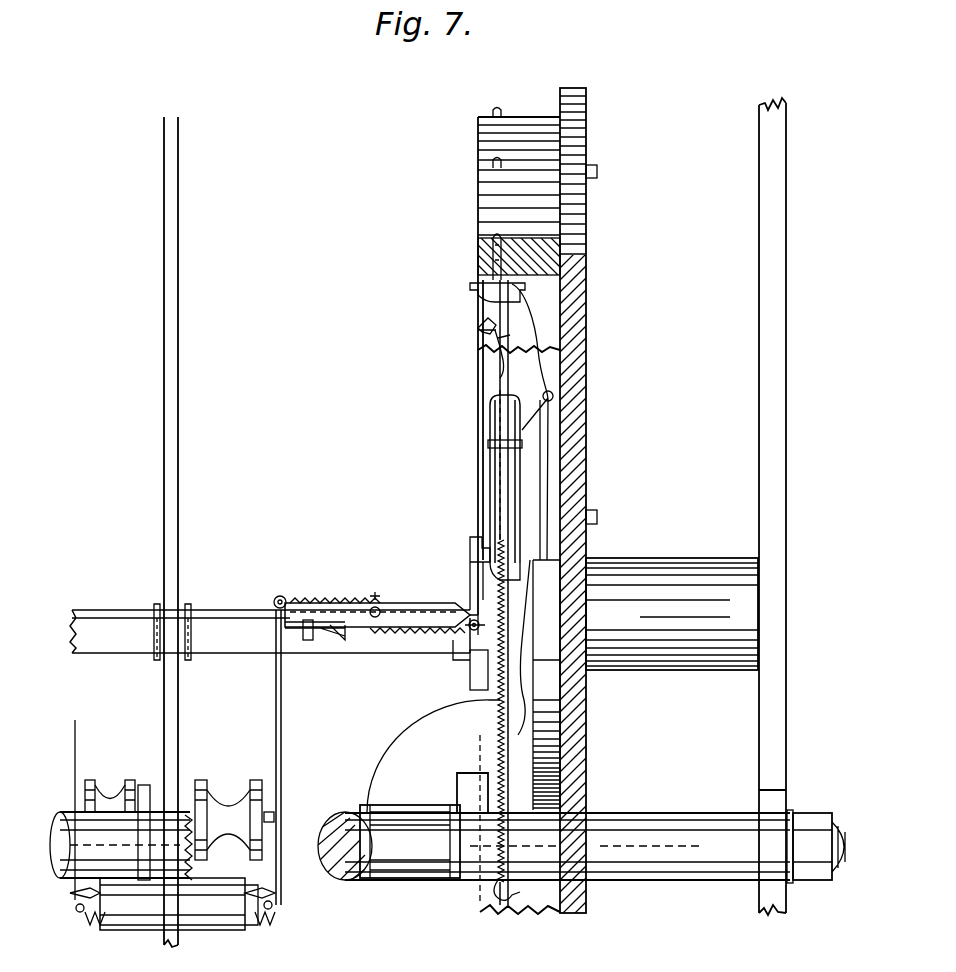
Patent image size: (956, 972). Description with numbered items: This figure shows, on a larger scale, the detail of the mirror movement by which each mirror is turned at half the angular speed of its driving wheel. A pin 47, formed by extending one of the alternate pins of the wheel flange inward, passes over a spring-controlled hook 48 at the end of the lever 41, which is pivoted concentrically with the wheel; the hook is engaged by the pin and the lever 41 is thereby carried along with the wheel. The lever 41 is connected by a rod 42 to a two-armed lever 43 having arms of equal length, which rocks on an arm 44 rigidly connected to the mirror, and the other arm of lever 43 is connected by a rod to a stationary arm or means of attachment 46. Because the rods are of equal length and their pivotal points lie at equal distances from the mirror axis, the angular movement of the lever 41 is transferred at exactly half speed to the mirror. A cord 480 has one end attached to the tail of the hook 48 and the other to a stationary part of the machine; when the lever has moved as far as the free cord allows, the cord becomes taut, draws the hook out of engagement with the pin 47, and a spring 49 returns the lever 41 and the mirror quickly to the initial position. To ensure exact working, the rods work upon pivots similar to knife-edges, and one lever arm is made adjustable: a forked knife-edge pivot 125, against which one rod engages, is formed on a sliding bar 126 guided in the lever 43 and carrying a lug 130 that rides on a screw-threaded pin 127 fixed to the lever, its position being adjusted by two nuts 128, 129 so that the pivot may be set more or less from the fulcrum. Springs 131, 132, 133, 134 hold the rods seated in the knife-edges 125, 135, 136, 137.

The lever 41 is at (500, 377).
The rod 42 is at (478, 427).
The lever 43 is at (468, 612).
The arm 44 is at (380, 610).
The stationary arm 46 is at (281, 738).
The pin 47 is at (490, 252).
The spring-controlled hook 48 is at (478, 278).
The spring 49 is at (470, 686).
The forked knife-edge pivot 125 is at (290, 618).
The sliding bar 126 is at (287, 603).
The screw-threaded pin 127 is at (340, 635).
The nut 128 is at (300, 630).
The nut 129 is at (320, 630).
The lug 130 is at (308, 640).
The spring 131 is at (372, 598).
The spring 132 is at (412, 633).
The spring 133 is at (272, 918).
The spring 134 is at (496, 336).
The knife-edge 135 is at (472, 605).
The knife-edge 136 is at (276, 893).
The knife-edge 137 is at (478, 330).
The cord 480 is at (550, 418).